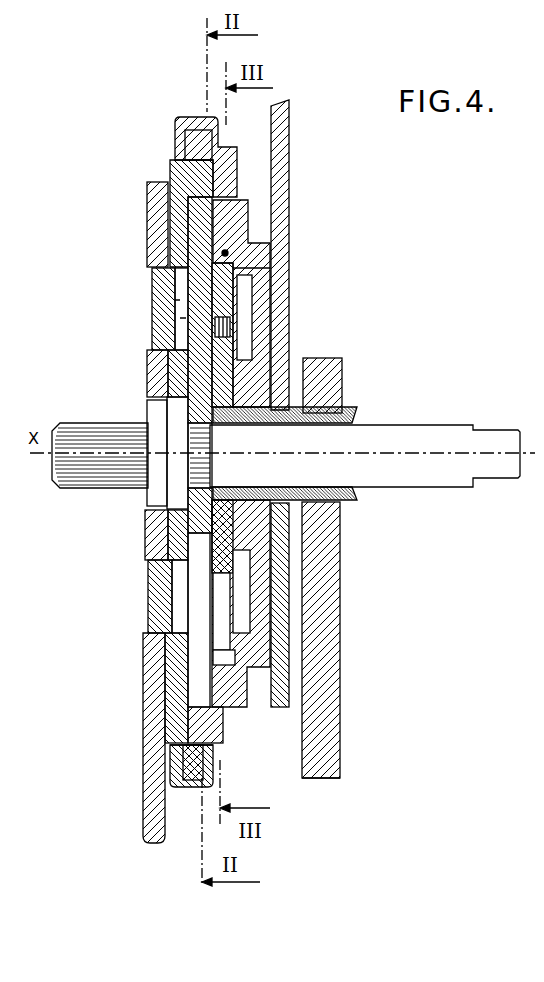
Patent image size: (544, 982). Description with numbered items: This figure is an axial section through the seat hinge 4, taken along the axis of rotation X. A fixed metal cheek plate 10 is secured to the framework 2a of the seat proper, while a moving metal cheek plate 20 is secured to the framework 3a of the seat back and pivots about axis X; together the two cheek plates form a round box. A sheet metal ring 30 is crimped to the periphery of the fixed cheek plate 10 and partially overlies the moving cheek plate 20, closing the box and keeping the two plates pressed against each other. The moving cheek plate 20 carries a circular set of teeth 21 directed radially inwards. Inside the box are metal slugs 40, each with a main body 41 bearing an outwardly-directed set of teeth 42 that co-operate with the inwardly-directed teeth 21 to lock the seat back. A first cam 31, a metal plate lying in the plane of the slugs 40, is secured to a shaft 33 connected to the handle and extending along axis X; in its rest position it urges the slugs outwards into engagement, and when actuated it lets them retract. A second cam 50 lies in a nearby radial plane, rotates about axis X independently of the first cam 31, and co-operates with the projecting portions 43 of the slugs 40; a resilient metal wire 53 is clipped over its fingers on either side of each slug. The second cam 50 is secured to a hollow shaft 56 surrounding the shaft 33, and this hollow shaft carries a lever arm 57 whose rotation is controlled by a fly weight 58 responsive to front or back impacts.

The hinge 4 is at (176, 118).
The sheet metal ring 30 is at (196, 118).
The circular set of teeth 21 is at (170, 176).
The outwardly-directed set of teeth 42 is at (160, 207).
The metal slugs 40 is at (178, 297).
The main body 41 is at (210, 338).
The first cam 31 is at (190, 392).
The shaft 33 is at (95, 467).
The fixed metal cheek plate 10 is at (148, 595).
The framework of the seat proper 2a is at (156, 812).
The framework of the seat back 3a is at (290, 172).
The projecting portions 43 is at (227, 273).
The moving metal cheek plate 20 is at (290, 297).
The resilient metal wire 53 is at (230, 327).
The hollow shaft 56 is at (340, 388).
The second cam 50 is at (210, 545).
The lever arm 57 is at (327, 662).
The fly weight 58 is at (317, 757).